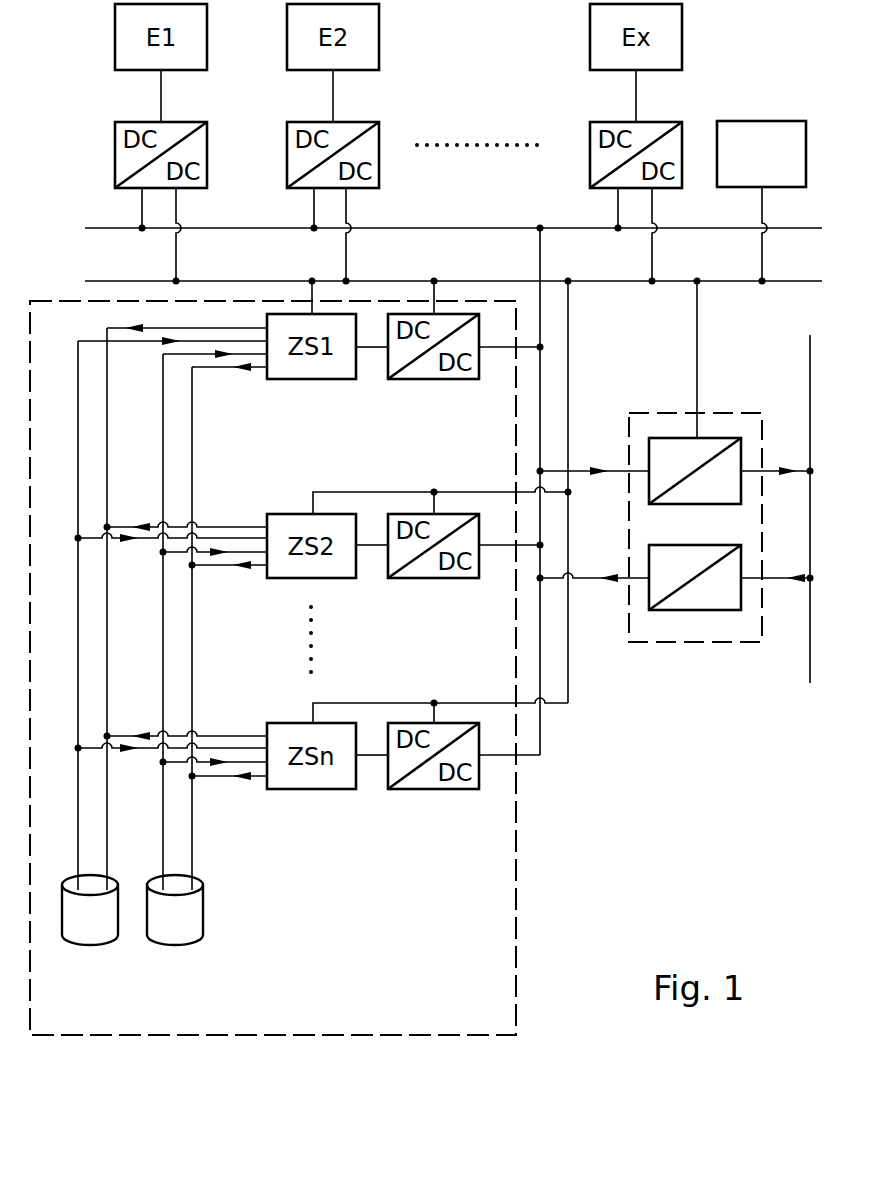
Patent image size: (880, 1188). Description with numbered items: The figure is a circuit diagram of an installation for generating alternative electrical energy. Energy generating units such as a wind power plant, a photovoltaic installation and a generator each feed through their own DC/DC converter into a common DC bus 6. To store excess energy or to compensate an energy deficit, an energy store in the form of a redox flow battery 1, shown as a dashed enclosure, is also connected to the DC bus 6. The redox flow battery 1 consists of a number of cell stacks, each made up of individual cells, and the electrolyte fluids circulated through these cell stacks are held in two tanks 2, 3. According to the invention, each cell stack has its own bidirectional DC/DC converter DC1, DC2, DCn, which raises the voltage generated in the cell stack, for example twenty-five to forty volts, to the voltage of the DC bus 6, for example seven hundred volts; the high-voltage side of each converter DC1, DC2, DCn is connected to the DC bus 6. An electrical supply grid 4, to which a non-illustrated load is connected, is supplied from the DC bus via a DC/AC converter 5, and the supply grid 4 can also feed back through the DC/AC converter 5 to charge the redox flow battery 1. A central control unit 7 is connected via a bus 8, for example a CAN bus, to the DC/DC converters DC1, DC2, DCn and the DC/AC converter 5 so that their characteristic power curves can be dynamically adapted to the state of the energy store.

The redox flow battery 1 is at (515, 970).
The tank 2 is at (85, 925).
The tank 3 is at (178, 925).
The electrical supply grid 4 is at (810, 659).
The DC/AC converter 5 is at (665, 412).
The DC bus 6 is at (455, 228).
The central control unit 7 is at (761, 201).
The bus 8 is at (732, 282).
The DC/DC converter DC1 is at (462, 380).
The DC/DC converter DC2 is at (442, 578).
The DC/DC converter DCn is at (433, 790).